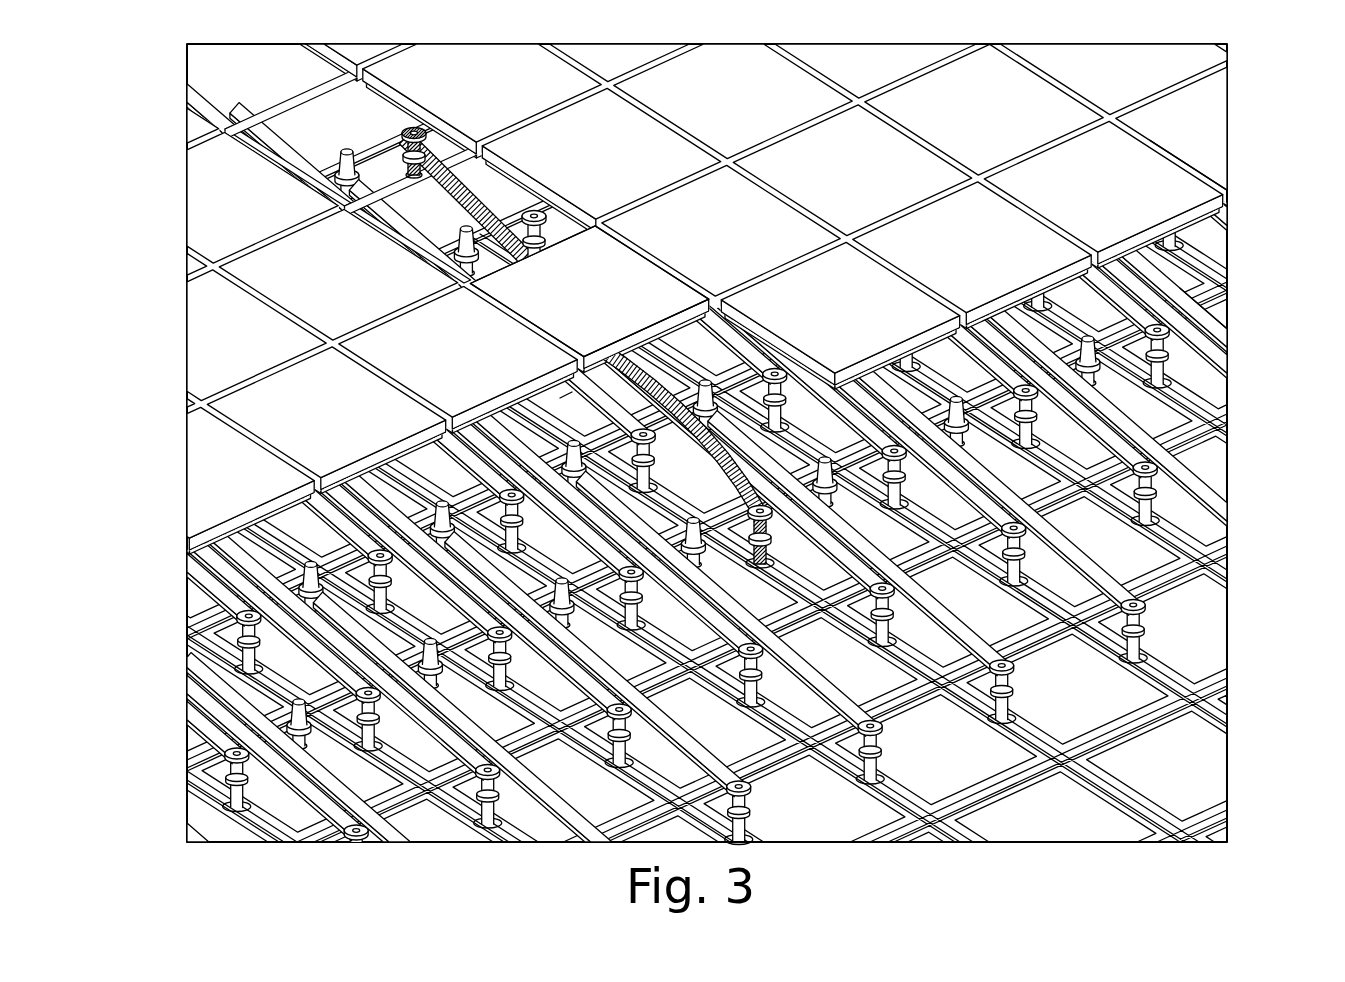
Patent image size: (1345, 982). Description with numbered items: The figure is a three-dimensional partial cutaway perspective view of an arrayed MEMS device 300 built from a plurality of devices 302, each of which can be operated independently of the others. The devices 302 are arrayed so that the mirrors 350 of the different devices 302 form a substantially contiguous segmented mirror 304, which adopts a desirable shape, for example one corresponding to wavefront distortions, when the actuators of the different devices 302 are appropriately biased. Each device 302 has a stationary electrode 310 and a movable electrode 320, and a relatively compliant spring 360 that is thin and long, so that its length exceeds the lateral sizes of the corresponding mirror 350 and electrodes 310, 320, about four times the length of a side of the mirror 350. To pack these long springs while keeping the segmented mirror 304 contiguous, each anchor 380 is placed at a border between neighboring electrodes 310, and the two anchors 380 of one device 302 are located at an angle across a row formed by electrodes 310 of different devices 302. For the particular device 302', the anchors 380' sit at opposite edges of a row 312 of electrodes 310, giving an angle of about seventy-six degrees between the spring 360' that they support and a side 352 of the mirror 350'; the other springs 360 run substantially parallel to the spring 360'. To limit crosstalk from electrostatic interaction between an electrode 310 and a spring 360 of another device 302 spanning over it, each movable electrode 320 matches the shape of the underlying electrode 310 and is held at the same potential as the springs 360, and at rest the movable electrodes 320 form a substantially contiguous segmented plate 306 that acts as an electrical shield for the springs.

The arrayed MEMS device 300 is at (117, 100).
The device 302 is at (707, 297).
The device 302' is at (589, 265).
The segmented mirror 304 is at (1228, 207).
The segmented plate 306 is at (1228, 257).
The stationary electrode 310 is at (947, 577).
The row 312 is at (1198, 773).
The movable electrode 320 is at (796, 405).
The mirror 350 is at (906, 283).
The mirror 350' is at (589, 291).
The side of mirror 352 is at (565, 393).
The spring 360 is at (707, 443).
The spring 360' is at (663, 410).
The anchor 380 is at (701, 444).
The anchor 380' is at (613, 320).